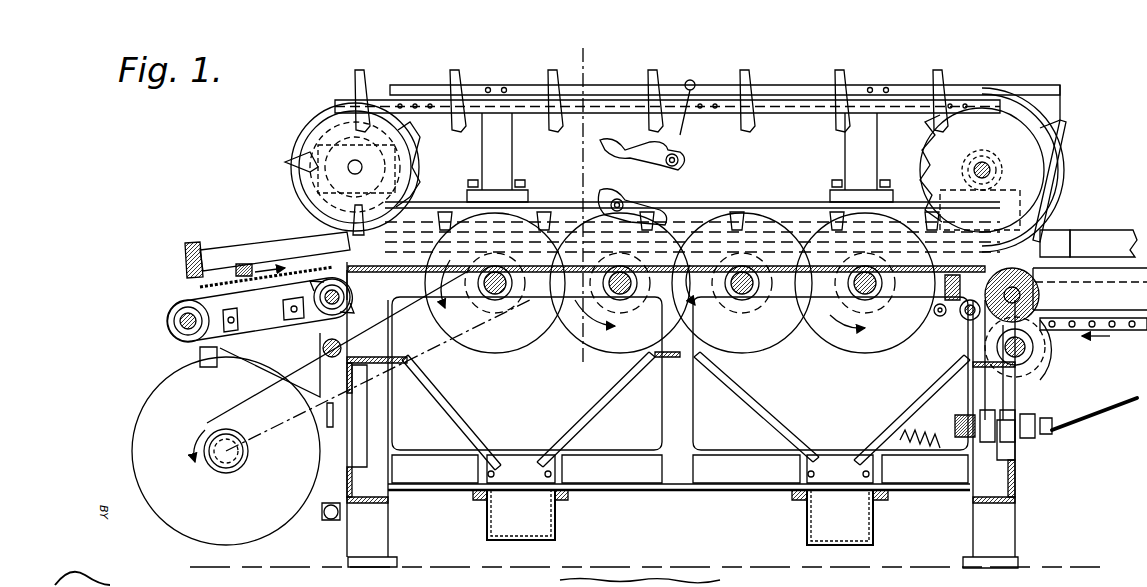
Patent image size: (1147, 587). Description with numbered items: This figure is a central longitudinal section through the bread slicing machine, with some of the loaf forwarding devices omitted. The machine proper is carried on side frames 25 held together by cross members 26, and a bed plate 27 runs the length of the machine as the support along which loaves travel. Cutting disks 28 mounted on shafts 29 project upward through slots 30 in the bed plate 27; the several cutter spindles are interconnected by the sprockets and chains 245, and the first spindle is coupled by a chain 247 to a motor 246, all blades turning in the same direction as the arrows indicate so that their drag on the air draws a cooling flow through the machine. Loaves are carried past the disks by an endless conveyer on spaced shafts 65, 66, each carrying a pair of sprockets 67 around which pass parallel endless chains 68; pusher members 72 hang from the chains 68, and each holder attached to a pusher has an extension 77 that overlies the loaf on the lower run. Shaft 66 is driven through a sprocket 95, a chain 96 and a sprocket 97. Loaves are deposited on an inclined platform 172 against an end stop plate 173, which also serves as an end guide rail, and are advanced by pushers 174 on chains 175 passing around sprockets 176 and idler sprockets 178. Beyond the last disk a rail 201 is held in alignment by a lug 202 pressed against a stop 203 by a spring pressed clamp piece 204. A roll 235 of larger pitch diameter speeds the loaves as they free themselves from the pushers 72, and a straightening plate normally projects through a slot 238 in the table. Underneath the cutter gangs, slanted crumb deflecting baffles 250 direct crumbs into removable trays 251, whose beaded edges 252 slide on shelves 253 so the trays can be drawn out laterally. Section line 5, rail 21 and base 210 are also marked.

The section line 5- 5 is at (598, 61).
The conveyor 21 is at (1120, 338).
The side frames 25 is at (698, 490).
The cross members 26 is at (382, 505).
The bed plate 27 is at (495, 283).
The cutting disks 28 is at (828, 340).
The shafts 29 is at (620, 283).
The slots 30 is at (823, 299).
The shaft 65 is at (350, 165).
The shaft 66 is at (990, 166).
The sprockets 67 is at (335, 120).
The endless chains 68 is at (405, 103).
The pusher members 72 is at (655, 80).
The extension 77 is at (675, 205).
The sprocket 95 is at (1045, 220).
The chain 96 is at (1062, 192).
The sprocket 97 is at (1040, 358).
The platform 172 is at (240, 262).
The end stop plate 173 is at (300, 250).
The pushers 174 is at (215, 246).
The chains 175 is at (270, 348).
The sprockets 176 is at (178, 325).
The idler sprockets 178 is at (320, 310).
The rail 201 is at (1072, 235).
The lug 202 is at (945, 285).
The stop 203 is at (935, 310).
The spring pressed clamp piece 204 is at (965, 318).
The base 210 is at (714, 580).
The roll 235 is at (1040, 292).
The slot 238 is at (779, 580).
The sprockets and chains 245 is at (742, 283).
The motor 246 is at (226, 451).
The chain 247 is at (432, 355).
The crumb deflecting baffles 250 is at (592, 415).
The removable trays 251 is at (535, 538).
The beaded edges 252 is at (563, 500).
The shelves 253 is at (480, 500).